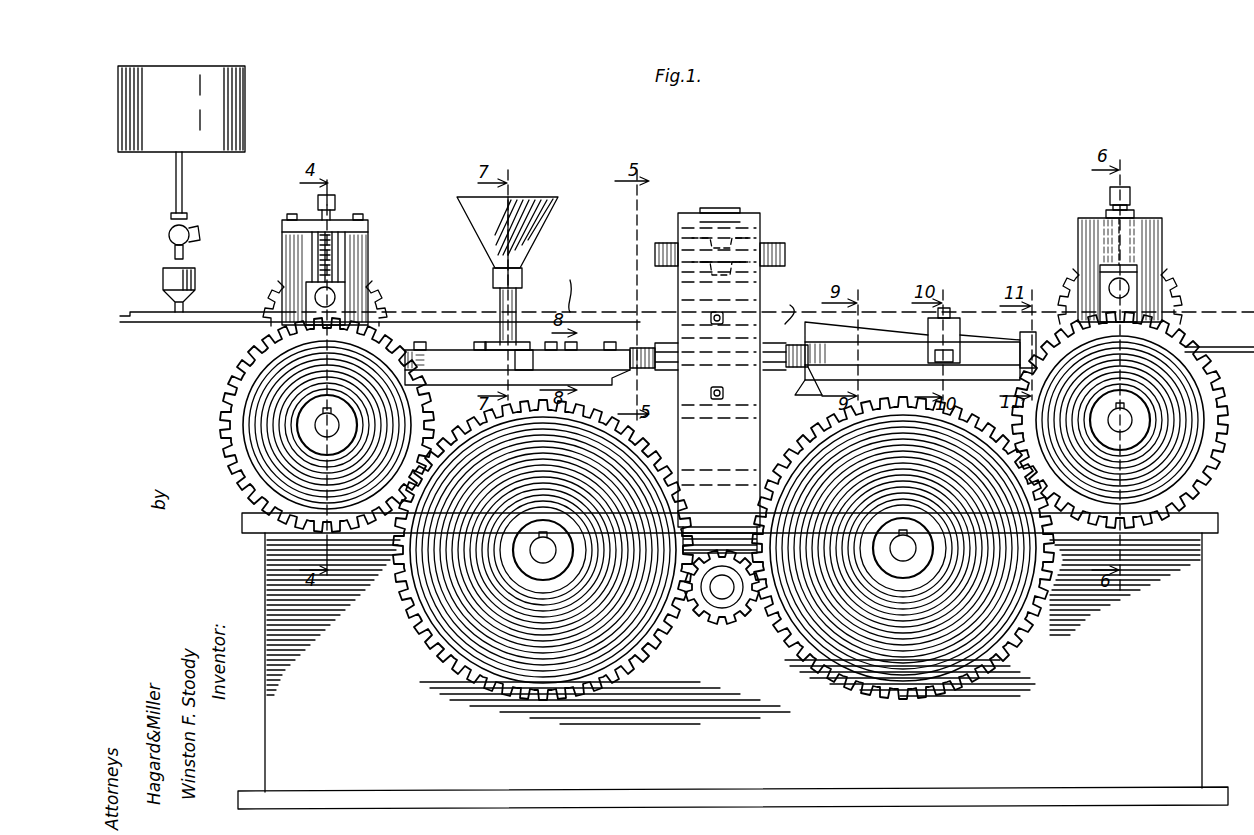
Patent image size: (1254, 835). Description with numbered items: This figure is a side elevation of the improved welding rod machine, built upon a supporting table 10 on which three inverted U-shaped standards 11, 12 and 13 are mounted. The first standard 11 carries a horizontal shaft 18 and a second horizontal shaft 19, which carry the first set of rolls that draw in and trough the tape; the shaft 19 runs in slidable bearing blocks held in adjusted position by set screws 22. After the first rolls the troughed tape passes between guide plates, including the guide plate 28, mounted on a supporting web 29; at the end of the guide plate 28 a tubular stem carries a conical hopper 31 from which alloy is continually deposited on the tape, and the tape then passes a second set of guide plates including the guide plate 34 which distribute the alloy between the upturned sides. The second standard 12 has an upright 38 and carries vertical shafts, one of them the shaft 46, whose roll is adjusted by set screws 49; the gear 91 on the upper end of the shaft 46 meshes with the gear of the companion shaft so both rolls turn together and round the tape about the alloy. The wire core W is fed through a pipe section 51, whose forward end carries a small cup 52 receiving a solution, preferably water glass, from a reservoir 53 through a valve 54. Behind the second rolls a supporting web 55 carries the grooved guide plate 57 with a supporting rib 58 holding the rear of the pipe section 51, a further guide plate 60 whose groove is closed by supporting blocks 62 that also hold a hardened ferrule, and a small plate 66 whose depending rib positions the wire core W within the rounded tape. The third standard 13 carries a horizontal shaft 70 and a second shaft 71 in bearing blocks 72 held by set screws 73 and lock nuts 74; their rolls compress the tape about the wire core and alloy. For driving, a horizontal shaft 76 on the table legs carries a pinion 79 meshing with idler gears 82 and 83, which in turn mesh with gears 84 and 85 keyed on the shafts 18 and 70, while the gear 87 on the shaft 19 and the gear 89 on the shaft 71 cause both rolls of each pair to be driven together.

The wire core W is at (128, 296).
The supporting table 10 is at (255, 553).
The standard 11 is at (374, 215).
The standard 12 is at (752, 222).
The standard 13 is at (1155, 232).
The horizontal shaft 18 is at (318, 428).
The horizontal shaft 19 is at (333, 294).
The set screws 22 is at (335, 250).
The guide plate 28 is at (452, 356).
The supporting web 29 is at (517, 388).
The conical hopper 31 is at (490, 222).
The guide plate 34 is at (590, 358).
The upright 38 is at (680, 288).
The shaft 46 is at (718, 209).
The set screws 49 is at (709, 406).
The pipe section 51 is at (686, 293).
The cup 52 is at (194, 280).
The reservoir 53 is at (236, 142).
The valve 54 is at (190, 230).
The supporting web 55 is at (828, 405).
The guide plate 57 is at (912, 353).
The supporting rib 58 is at (846, 336).
The guide plate 60 is at (952, 368).
The supporting blocks 62 is at (950, 328).
The small plate 66 is at (1034, 338).
The horizontal shaft 70 is at (1130, 425).
The horizontal shaft 71 is at (1130, 288).
The bearing blocks 72 is at (1135, 280).
The set screws 73 is at (1106, 206).
The lock nuts 74 is at (1129, 210).
The horizontal shaft 76 is at (720, 594).
The pinion 79 is at (735, 610).
The idler gear 82 is at (543, 550).
The idler gear 83 is at (903, 548).
The gear 84 is at (300, 432).
The gear 85 is at (1150, 480).
The gear 87 is at (317, 289).
The gear 89 is at (1062, 270).
The gear 91 is at (786, 252).